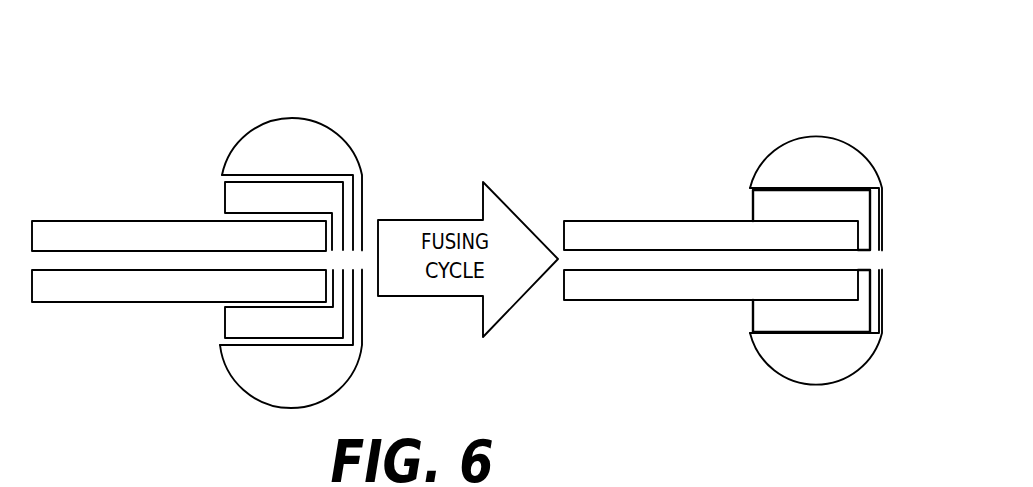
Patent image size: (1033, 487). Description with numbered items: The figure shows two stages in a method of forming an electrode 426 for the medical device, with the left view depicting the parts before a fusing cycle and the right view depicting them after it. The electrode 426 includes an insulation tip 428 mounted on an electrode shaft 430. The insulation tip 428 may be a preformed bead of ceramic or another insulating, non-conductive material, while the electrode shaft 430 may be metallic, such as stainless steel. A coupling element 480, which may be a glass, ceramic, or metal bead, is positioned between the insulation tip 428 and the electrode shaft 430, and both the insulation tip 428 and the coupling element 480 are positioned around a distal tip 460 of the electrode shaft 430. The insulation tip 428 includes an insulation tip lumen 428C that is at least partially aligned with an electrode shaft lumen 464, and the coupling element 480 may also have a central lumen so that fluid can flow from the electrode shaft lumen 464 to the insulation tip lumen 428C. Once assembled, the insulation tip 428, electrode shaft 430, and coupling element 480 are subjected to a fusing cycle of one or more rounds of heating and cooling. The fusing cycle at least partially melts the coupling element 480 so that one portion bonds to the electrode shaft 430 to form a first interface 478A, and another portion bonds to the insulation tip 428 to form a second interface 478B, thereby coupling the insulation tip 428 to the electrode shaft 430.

The electrode 426 is at (716, 117).
The insulation tip 428 is at (328, 122).
The insulation tip lumen 428C is at (358, 260).
The electrode shaft 430 is at (86, 220).
The distal tip 460 is at (241, 221).
The electrode shaft lumen 464 is at (143, 264).
The first interface 478A is at (767, 220).
The second interface 478B is at (850, 187).
The coupling element 480 is at (250, 192).